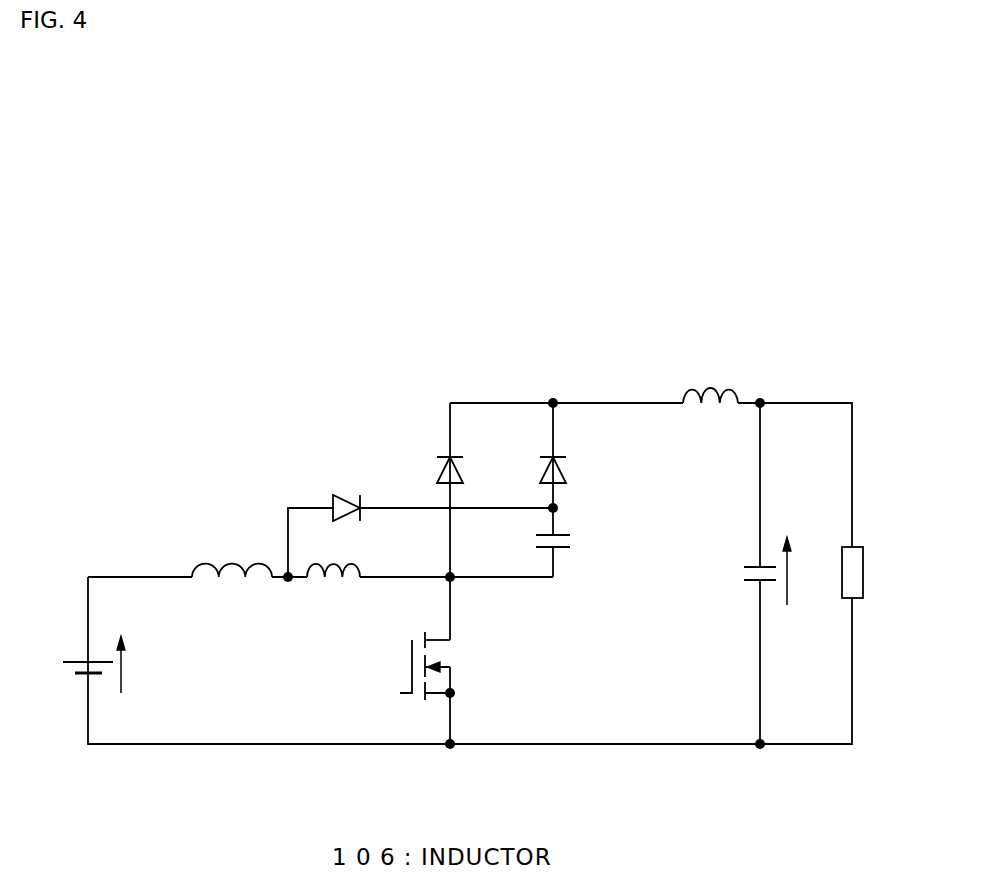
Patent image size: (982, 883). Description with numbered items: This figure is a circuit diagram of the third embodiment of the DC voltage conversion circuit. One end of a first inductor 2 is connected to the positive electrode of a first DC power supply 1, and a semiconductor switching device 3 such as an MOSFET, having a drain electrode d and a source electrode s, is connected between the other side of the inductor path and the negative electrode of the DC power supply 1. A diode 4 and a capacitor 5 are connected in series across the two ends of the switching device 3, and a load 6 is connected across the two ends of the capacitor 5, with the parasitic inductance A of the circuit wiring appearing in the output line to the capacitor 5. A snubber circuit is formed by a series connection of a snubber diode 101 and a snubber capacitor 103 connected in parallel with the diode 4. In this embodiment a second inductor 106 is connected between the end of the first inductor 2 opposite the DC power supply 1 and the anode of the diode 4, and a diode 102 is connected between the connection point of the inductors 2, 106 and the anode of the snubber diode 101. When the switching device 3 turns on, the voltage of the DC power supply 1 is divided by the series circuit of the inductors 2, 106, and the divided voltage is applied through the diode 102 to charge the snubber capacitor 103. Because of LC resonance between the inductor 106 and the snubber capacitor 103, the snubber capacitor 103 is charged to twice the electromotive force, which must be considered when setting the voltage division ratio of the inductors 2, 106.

The DC power supply 1 is at (80, 655).
The inductor 2 is at (237, 558).
The semiconductor switching device 3 is at (433, 628).
The diode 4 is at (440, 448).
The capacitor 5 is at (750, 553).
The load 6 is at (865, 550).
The snubber diode 101 is at (560, 450).
The diode 102 is at (352, 492).
The snubber capacitor 103 is at (562, 555).
The second inductor 106 is at (327, 585).
The parasitic inductance A is at (707, 378).